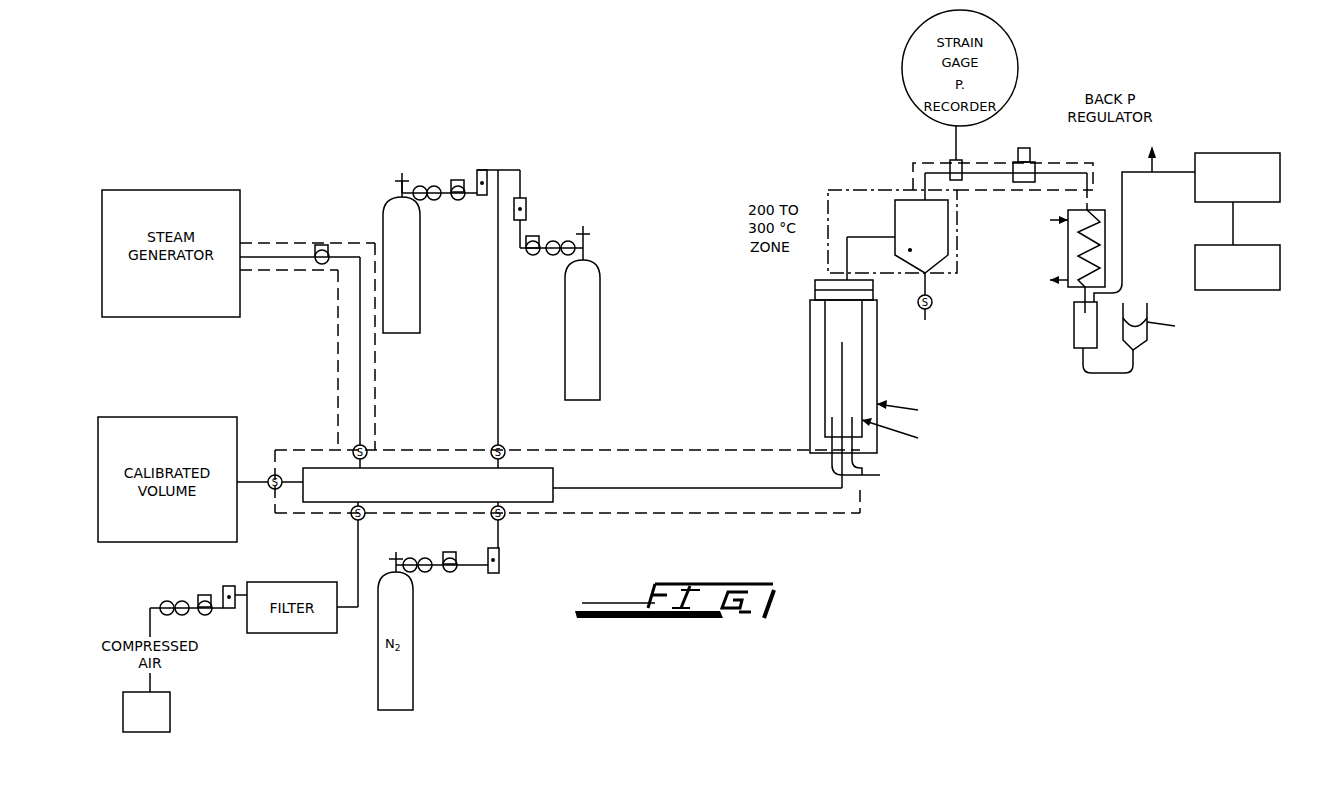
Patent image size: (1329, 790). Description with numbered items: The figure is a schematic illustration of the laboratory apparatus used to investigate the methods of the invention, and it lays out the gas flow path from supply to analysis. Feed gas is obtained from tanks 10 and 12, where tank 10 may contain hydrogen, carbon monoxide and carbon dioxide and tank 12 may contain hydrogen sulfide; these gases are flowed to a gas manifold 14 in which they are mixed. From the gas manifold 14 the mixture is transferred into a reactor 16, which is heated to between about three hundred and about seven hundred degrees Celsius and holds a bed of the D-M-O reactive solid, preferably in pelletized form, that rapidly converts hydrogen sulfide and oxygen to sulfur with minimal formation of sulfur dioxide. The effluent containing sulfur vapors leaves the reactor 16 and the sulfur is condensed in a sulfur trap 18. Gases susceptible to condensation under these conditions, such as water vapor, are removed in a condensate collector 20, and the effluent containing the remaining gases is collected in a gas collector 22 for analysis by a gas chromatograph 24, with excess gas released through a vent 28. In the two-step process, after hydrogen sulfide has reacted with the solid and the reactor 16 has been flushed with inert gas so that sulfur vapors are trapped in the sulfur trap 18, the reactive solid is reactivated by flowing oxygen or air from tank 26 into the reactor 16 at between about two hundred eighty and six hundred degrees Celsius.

The tank 10 is at (420, 266).
The tank 12 is at (600, 300).
The gas manifold 14 is at (437, 468).
The reactor 16 is at (862, 384).
The sulfur trap 18 is at (957, 250).
The condensate collector 20 is at (1073, 335).
The gas collector 22 is at (1250, 153).
The gas chromatograph 24 is at (1280, 272).
The tank 26 is at (146, 702).
The vent 28 is at (1154, 151).